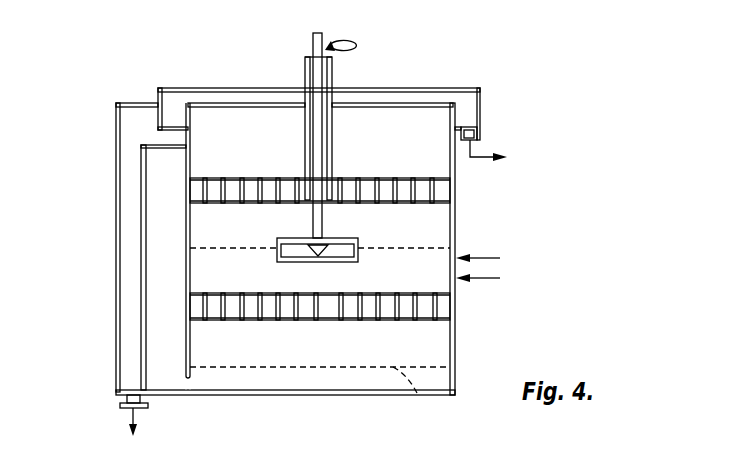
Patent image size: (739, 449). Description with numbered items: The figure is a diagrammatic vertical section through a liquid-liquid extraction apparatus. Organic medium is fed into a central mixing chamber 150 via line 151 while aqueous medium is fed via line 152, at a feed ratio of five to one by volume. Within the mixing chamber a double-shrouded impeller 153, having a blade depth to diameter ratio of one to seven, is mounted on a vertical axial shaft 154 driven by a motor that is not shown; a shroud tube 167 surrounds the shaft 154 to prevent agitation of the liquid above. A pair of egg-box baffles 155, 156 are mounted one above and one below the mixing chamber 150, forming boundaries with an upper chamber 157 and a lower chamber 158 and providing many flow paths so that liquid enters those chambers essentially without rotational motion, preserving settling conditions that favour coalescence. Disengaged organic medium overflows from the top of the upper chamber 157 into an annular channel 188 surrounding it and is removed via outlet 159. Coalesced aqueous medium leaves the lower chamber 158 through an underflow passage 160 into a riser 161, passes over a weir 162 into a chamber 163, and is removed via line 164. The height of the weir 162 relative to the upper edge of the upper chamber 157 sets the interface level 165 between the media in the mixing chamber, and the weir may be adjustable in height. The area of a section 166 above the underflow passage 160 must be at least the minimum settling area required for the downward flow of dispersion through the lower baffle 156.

The mixing chamber 150 is at (455, 230).
The line 151 is at (500, 258).
The line 152 is at (500, 278).
The double-shrouded impeller 153 is at (343, 238).
The vertical axial shaft 154 is at (327, 75).
The egg-box baffle 155 is at (455, 187).
The egg-box baffle 156 is at (420, 320).
The upper chamber 157 is at (450, 153).
The lower chamber 158 is at (442, 348).
The outlet 159 is at (480, 152).
The underflow passage 160 is at (193, 383).
The riser 161 is at (167, 348).
The weir 162 is at (140, 148).
The chamber 163 is at (130, 282).
The line 164 is at (130, 414).
The interface level 165 is at (253, 249).
The section 166 is at (417, 393).
The shroud tube 167 is at (305, 78).
The annular channel 188 is at (481, 104).